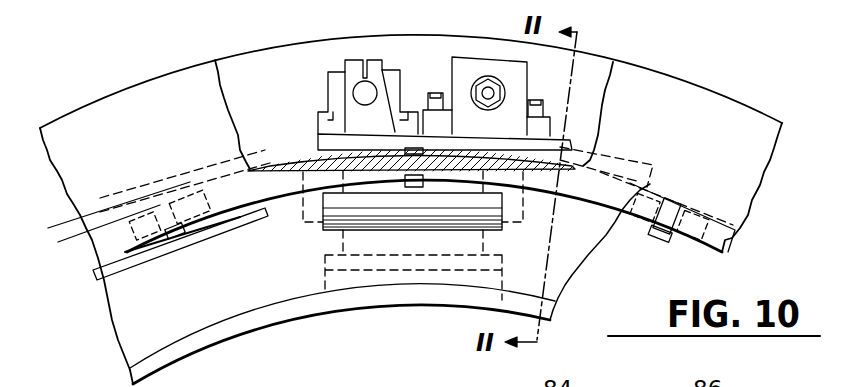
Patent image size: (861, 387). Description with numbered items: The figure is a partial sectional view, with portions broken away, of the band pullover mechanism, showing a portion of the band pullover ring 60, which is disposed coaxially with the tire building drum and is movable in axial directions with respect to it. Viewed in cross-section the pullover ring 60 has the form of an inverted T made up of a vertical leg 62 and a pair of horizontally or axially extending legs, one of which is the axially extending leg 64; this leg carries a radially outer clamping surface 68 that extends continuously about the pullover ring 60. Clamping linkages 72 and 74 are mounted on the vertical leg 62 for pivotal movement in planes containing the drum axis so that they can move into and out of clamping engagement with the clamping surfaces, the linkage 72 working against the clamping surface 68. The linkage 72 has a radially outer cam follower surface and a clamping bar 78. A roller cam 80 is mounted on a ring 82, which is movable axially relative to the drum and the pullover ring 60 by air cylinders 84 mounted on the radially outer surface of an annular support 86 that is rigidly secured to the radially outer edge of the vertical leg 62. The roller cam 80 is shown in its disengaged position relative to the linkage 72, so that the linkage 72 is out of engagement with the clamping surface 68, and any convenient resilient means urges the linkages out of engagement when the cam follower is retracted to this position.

The band pullover ring 60 is at (298, 77).
The vertical leg 62 is at (117, 330).
The axially extending leg 64 is at (283, 308).
The clamping surface 68 is at (240, 304).
The clamping linkage 72 is at (210, 228).
The clamping linkage 74 is at (368, 270).
The clamping bar 78 is at (338, 232).
The roller cam 80 is at (176, 238).
The ring 82 is at (191, 102).
The air cylinder 84 is at (476, 68).
The annular support 86 is at (289, 150).